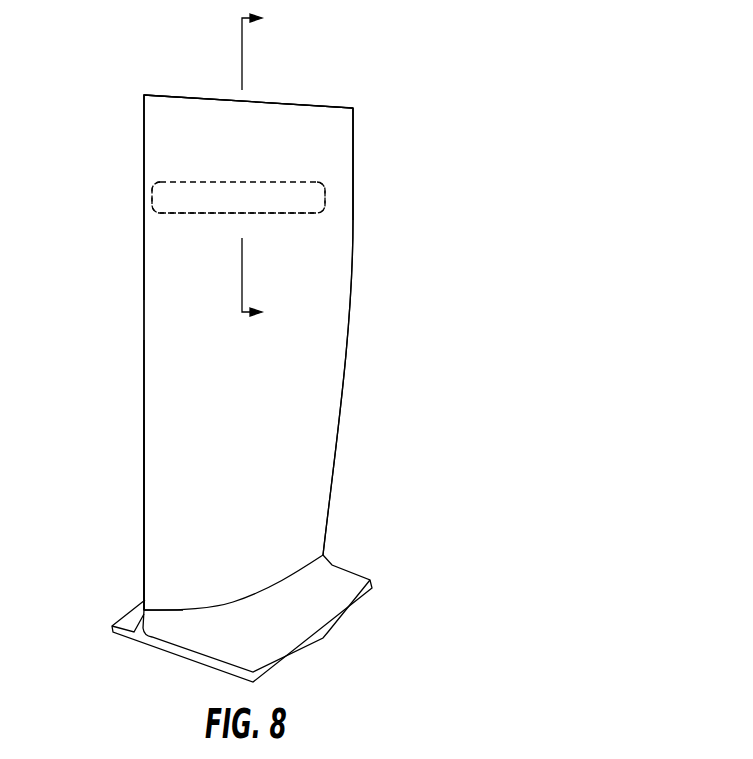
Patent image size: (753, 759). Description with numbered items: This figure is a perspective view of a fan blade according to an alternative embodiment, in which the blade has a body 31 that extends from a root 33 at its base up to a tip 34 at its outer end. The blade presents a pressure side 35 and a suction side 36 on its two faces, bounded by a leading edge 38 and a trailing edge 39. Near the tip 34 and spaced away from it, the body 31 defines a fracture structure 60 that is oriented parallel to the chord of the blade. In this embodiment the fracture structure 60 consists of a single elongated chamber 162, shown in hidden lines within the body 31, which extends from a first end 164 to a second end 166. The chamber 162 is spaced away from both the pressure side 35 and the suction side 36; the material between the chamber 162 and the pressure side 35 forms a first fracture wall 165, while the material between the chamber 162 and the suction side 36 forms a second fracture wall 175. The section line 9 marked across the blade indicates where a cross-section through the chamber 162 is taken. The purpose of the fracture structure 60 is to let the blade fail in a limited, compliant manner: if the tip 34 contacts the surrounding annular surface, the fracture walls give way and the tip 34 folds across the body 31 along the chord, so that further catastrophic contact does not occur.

The section line 9- 9 is at (259, 166).
The body 31 is at (185, 460).
The root 33 is at (295, 608).
The tip 34 is at (346, 108).
The pressure side 35 is at (193, 290).
The suction side 36 is at (144, 349).
The leading edge 38 is at (144, 408).
The trailing edge 39 is at (337, 437).
The fracture structure 60 is at (411, 182).
The elongated chamber 162 is at (230, 183).
The first end 164 is at (323, 192).
The first fracture wall 165 is at (330, 212).
The second end 166 is at (155, 183).
The second fracture wall 175 is at (150, 207).